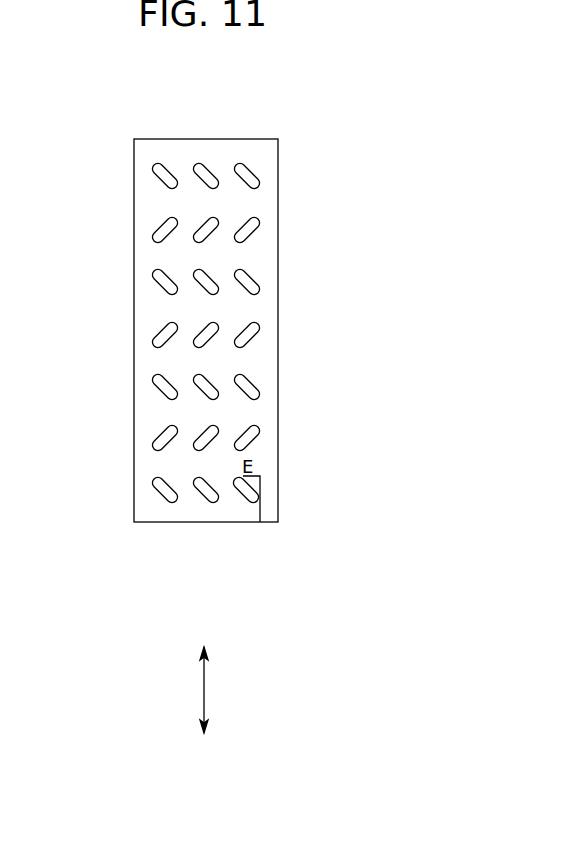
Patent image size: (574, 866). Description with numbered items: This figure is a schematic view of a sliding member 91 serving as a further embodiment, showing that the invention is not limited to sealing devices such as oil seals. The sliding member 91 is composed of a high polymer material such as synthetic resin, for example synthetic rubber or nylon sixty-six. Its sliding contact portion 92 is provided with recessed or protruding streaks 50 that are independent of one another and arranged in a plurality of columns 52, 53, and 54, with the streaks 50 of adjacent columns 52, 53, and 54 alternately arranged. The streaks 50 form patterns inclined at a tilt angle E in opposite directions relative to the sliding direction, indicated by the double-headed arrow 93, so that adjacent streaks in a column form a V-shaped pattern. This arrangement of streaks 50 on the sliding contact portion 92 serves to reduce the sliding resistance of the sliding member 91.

The recessed streaks 50 is at (175, 218).
The column 52 is at (165, 490).
The column 53 is at (206, 490).
The column 54 is at (246, 490).
The sliding member 91 is at (281, 330).
The sliding contact portion 92 is at (264, 271).
The direction of movement 93 is at (204, 688).